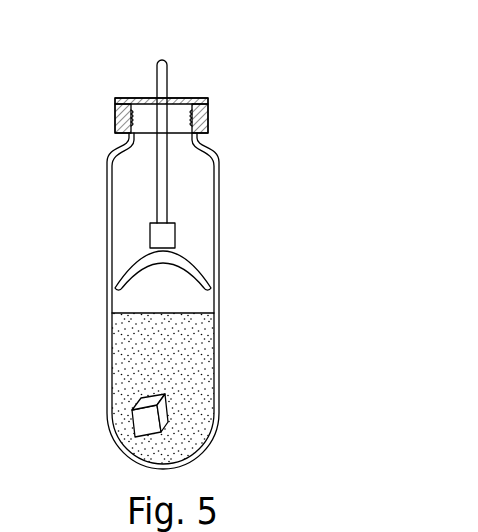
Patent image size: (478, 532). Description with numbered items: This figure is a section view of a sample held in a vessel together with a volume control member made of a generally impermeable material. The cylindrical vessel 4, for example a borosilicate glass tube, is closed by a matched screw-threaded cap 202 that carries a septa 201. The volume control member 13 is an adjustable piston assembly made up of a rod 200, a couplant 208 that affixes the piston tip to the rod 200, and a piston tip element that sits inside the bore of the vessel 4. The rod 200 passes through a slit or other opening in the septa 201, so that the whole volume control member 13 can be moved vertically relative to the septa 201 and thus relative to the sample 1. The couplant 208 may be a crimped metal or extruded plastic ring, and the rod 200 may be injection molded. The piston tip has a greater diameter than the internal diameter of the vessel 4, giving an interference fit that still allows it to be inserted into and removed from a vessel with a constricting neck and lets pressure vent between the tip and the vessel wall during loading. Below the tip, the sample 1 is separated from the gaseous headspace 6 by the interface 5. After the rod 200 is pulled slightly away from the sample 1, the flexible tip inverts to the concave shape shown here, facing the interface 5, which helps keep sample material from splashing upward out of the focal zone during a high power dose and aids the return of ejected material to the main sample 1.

The sample 1 is at (210, 366).
The vessel 4 is at (219, 210).
The interface 5 is at (141, 321).
The headspace 6 is at (147, 299).
The volume control member 13 is at (170, 83).
The rod 200 is at (166, 68).
The septa 201 is at (183, 97).
The screw-threaded cap 202 is at (208, 118).
The couplant 208 is at (150, 238).